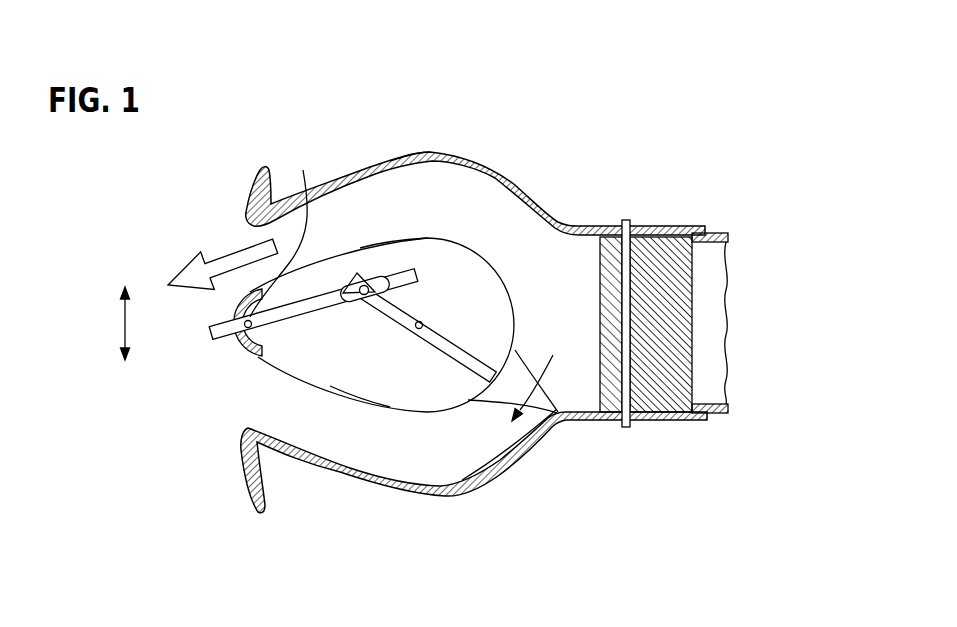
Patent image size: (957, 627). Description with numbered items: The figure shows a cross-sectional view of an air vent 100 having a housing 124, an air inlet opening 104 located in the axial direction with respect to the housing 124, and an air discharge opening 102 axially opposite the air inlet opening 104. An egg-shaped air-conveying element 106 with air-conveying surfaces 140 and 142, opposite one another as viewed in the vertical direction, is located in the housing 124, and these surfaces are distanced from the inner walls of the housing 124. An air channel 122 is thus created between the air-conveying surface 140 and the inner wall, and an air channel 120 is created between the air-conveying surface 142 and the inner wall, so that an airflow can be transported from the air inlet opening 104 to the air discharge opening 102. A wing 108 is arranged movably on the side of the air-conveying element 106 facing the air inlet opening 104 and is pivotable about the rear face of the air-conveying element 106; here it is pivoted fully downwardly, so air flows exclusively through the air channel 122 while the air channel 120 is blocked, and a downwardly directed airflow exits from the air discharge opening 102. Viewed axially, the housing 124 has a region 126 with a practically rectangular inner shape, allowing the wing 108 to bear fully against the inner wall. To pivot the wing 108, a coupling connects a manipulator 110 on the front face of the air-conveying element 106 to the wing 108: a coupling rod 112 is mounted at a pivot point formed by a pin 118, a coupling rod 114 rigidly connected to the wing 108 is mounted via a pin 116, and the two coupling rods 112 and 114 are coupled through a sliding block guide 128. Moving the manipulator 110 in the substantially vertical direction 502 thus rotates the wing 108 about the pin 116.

The air vent 100 is at (675, 90).
The air discharge opening 102 is at (232, 240).
The air inlet opening 104 is at (733, 318).
The air-conveying element 106 is at (373, 370).
The wing 108 is at (560, 399).
The manipulator 110 is at (212, 333).
The coupling rod 112 is at (300, 312).
The coupling rod 114 is at (447, 340).
The pin 116 is at (419, 330).
The pin 118 is at (285, 228).
The air channel 120 is at (453, 448).
The air channel 122 is at (467, 212).
The housing 124 is at (406, 157).
The region 126 is at (643, 213).
The sliding block guide 128 is at (372, 272).
The air-conveying surface 140 is at (388, 237).
The air-conveying surface 142 is at (359, 400).
The direction 502 is at (121, 325).